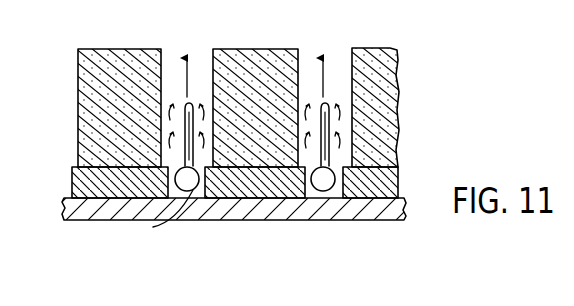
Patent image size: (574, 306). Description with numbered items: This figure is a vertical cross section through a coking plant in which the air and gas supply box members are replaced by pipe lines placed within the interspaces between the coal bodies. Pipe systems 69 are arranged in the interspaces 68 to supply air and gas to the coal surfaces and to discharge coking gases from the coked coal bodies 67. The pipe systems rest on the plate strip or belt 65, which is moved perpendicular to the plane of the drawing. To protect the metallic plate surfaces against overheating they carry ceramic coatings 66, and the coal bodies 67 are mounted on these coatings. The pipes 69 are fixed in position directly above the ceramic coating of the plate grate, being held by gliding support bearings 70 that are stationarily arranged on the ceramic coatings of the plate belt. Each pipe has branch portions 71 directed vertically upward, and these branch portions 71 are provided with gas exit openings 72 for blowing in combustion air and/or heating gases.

The plate strip or belt 65 is at (63, 210).
The ceramic coating 66 is at (395, 182).
The coked coal body 67 is at (112, 38).
The interspace 68 is at (200, 53).
The pipe system 69 is at (182, 190).
The gliding support bearing 70 is at (159, 216).
The branch portion 71 is at (80, 160).
The gas exit opening 72 is at (186, 106).